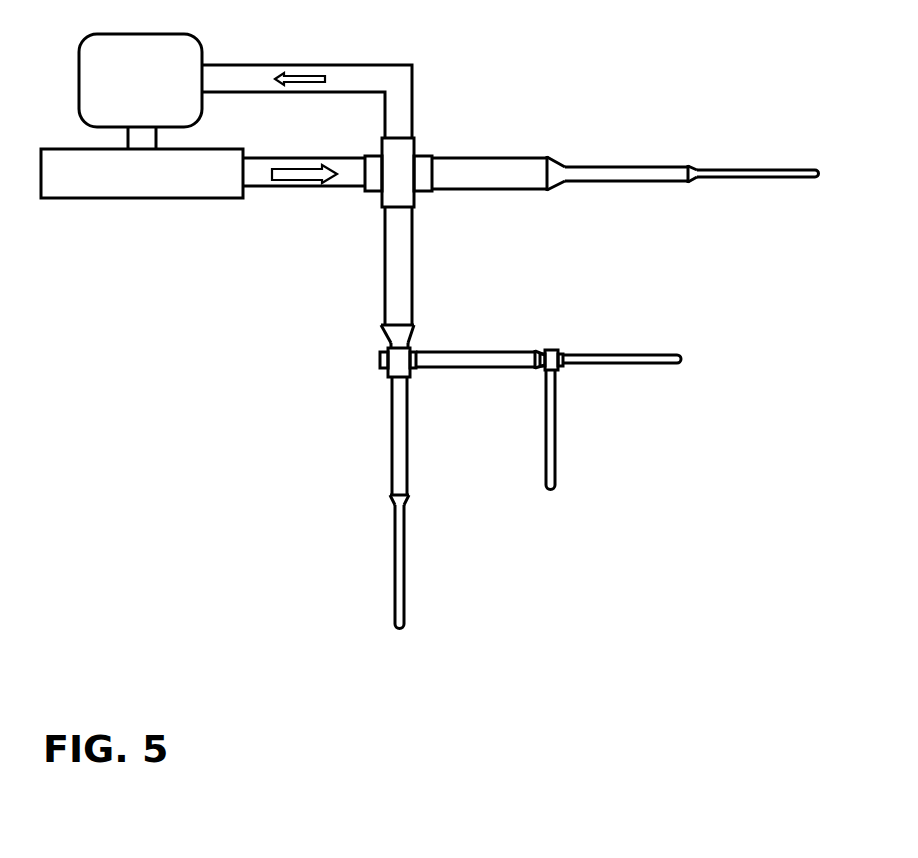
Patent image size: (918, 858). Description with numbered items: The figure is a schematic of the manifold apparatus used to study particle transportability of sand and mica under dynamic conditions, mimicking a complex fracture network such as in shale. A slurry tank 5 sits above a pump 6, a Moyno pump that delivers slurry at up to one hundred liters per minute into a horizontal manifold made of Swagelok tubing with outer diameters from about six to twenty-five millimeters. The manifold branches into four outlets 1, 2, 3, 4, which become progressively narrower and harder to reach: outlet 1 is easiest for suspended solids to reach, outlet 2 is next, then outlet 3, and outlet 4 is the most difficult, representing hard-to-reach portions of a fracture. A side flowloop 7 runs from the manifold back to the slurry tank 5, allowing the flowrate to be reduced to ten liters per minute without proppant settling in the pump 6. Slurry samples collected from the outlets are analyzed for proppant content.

The outlet 1 is at (625, 153).
The outlet 2 is at (414, 503).
The outlet 3 is at (548, 338).
The outlet 4 is at (568, 430).
The slurry tank 5 is at (140, 80).
The pump 6 is at (142, 173).
The side flowloop 7 is at (307, 82).